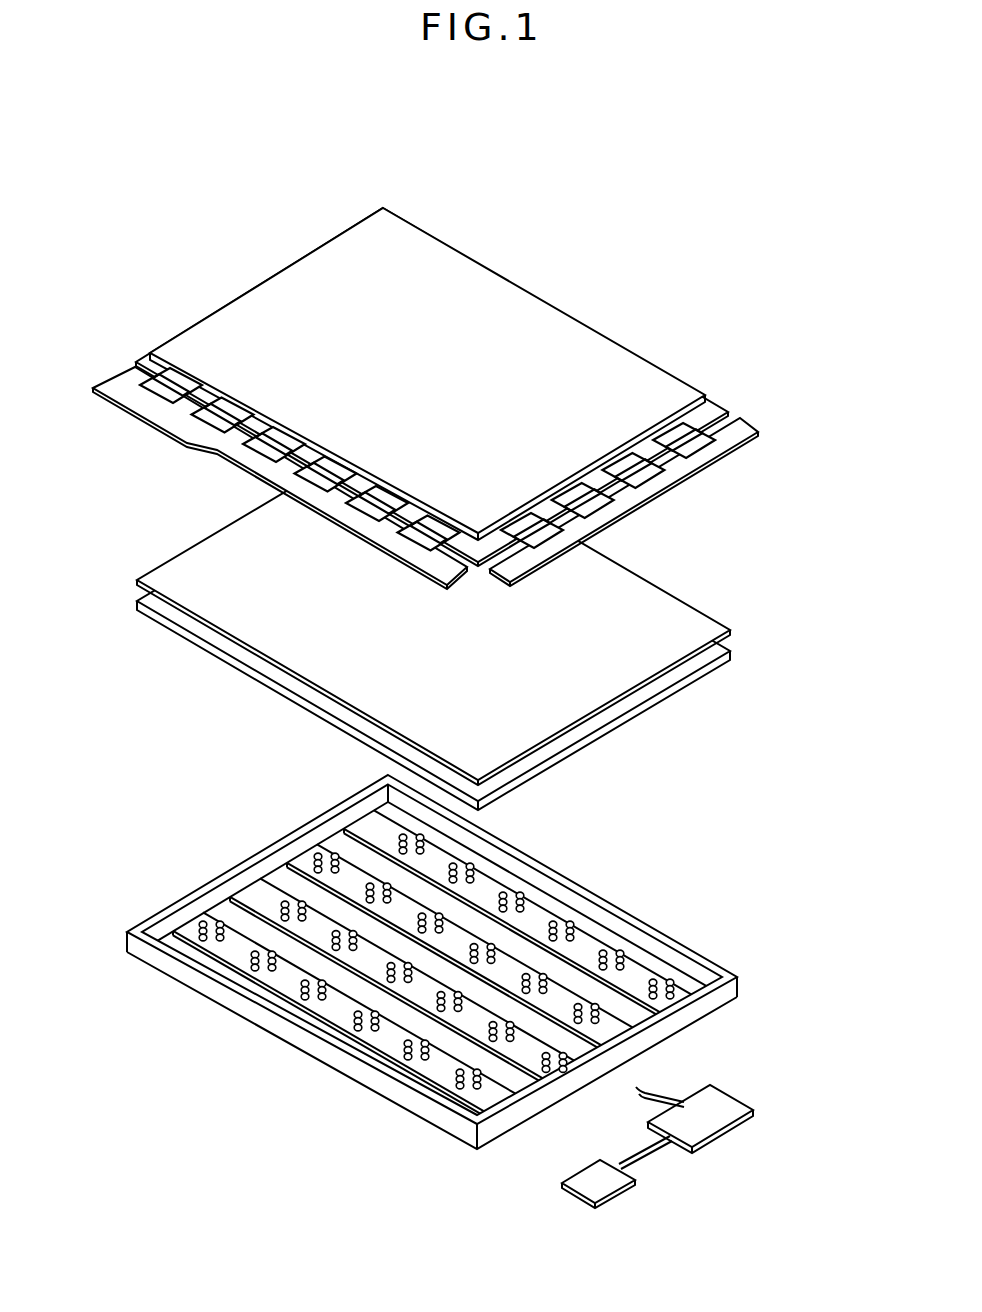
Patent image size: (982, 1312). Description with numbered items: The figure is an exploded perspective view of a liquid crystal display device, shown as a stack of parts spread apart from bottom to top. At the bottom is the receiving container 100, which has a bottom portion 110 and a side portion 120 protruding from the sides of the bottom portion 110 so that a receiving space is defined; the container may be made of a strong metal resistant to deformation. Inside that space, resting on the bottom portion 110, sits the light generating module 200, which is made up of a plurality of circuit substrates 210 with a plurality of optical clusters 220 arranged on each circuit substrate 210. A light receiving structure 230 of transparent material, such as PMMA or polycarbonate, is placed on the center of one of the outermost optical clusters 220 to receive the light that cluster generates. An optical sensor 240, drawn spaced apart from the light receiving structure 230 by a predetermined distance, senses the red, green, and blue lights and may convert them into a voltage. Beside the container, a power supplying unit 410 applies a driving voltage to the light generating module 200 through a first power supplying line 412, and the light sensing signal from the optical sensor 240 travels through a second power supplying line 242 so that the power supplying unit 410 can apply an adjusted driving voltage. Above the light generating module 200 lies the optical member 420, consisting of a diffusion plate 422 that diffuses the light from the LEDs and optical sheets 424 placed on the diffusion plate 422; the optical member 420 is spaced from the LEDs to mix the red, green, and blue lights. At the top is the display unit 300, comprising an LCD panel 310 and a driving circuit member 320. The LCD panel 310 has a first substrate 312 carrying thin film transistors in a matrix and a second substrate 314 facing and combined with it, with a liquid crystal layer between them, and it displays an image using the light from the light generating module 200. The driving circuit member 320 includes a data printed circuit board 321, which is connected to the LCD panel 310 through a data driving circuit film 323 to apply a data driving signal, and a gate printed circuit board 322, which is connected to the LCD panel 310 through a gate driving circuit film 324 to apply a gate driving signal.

The receiving container 100 is at (432, 977).
The bottom portion 110 is at (315, 1020).
The side portion 120 is at (343, 1067).
The light generating module 200 is at (432, 1003).
The circuit substrate 210 is at (427, 1067).
The optical cluster 220 is at (460, 1078).
The light receiving structure 230 is at (472, 1088).
The optical sensor 240 is at (607, 1187).
The second power supplying line 242 is at (645, 1153).
The display unit 300 is at (439, 436).
The LCD panel 310 is at (408, 387).
The first substrate 312 is at (150, 360).
The second substrate 314 is at (197, 332).
The driving circuit member 320 is at (439, 515).
The data printed circuit board 321 is at (162, 418).
The gate printed circuit board 322 is at (673, 470).
The data driving circuit film 323 is at (205, 415).
The gate driving circuit film 324 is at (690, 445).
The power supplying unit 410 is at (710, 1096).
The first power supplying line 412 is at (663, 1092).
The optical member 420 is at (512, 620).
The diffusion plate 422 is at (712, 652).
The optical sheets 424 is at (705, 620).